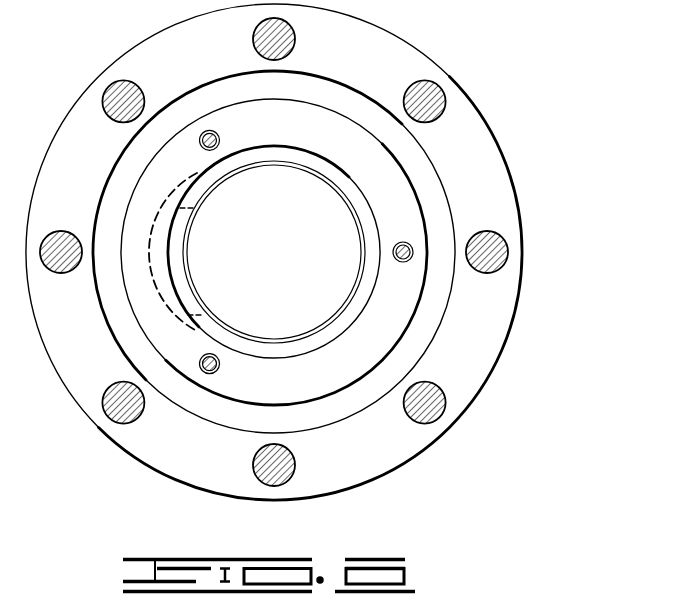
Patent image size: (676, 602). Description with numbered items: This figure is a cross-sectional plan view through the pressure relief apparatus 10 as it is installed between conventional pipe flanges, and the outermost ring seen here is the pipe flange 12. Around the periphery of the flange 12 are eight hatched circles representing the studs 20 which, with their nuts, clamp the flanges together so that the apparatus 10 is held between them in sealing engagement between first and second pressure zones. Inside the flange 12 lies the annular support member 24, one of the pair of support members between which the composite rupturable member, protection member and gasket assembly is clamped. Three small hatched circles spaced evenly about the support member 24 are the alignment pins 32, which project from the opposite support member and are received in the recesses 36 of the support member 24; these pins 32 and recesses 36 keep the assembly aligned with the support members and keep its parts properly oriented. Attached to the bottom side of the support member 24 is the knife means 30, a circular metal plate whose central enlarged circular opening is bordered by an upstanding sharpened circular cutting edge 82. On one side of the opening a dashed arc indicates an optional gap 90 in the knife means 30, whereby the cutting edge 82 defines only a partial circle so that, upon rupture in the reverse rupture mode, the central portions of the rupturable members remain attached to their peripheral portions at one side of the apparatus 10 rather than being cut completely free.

The apparatus 10 is at (437, 204).
The pipe flange 12 is at (478, 142).
The studs 20 is at (113, 98).
The annular support member 24 is at (400, 320).
The knife means 30 is at (288, 158).
The alignment pins 32 is at (205, 150).
The recesses 36 is at (212, 132).
The cutting edge 82 is at (352, 228).
The gap 90 is at (173, 248).